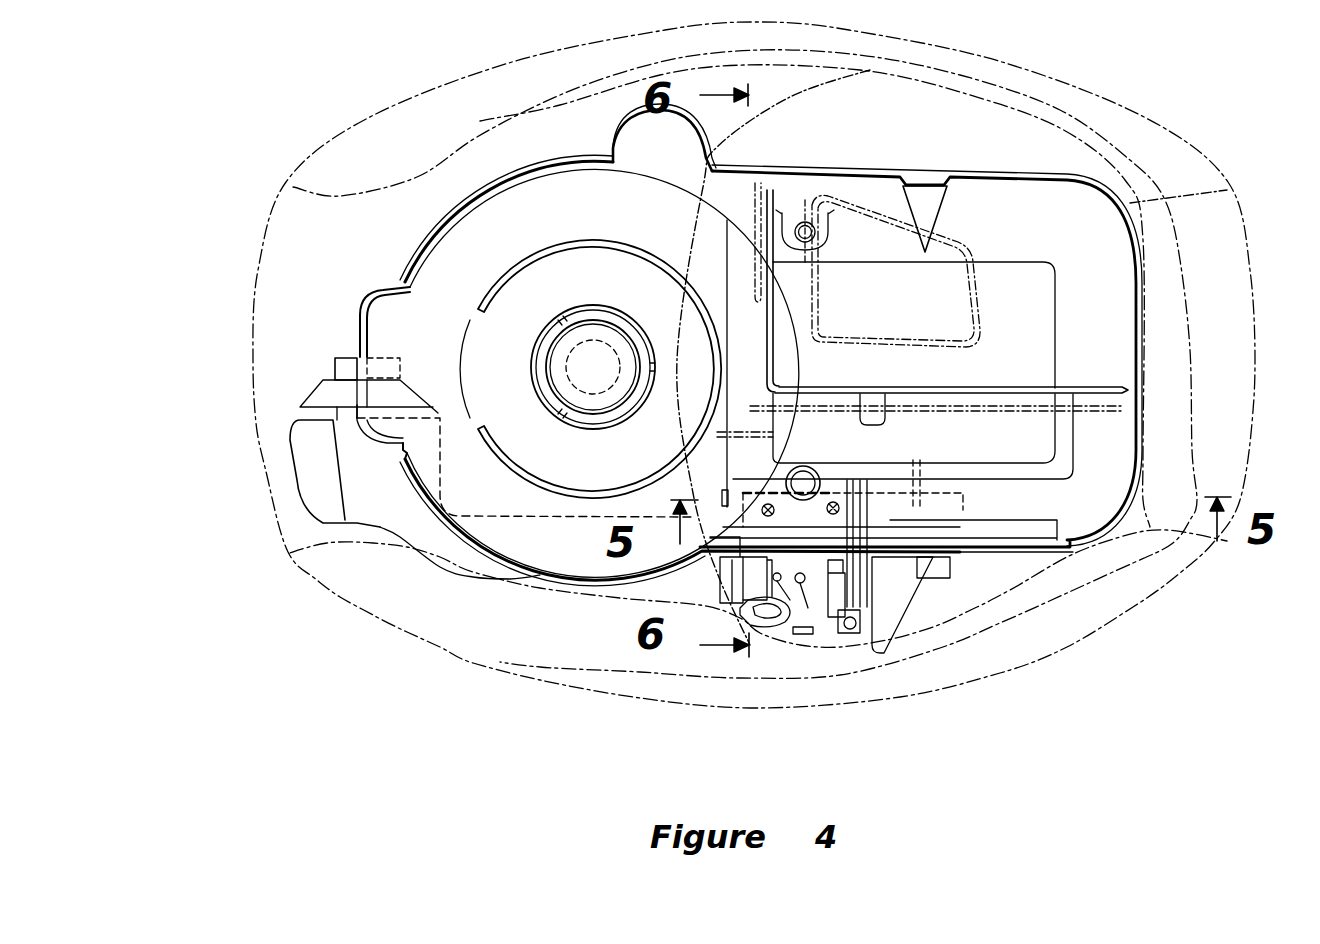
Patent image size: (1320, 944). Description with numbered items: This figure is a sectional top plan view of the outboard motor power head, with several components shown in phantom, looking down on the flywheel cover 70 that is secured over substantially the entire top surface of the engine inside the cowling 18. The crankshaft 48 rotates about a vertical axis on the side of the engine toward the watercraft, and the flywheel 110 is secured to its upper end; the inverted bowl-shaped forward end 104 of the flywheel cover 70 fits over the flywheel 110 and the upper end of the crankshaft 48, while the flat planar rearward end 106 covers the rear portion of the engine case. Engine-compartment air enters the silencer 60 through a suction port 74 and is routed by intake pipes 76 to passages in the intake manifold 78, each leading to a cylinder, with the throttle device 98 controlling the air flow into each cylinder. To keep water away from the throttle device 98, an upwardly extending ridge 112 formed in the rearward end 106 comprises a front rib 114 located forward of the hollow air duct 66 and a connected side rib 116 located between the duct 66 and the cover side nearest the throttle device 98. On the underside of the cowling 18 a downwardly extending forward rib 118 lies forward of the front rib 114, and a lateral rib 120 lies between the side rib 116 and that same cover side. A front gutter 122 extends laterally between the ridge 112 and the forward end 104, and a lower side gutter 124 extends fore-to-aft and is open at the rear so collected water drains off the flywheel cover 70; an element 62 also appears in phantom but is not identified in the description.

The cowling 18 is at (395, 155).
The crankshaft 48 is at (547, 373).
The silencer 60 is at (315, 475).
The deck outline 62 is at (1020, 92).
The hollow air duct 66 is at (983, 313).
The flywheel cover 70 is at (583, 187).
The suction port 74 is at (343, 352).
The intake pipes 76 is at (470, 562).
The intake manifold 78 is at (950, 568).
The throttle device 98 is at (818, 620).
The forward end 104 is at (547, 193).
The rearward end 106 is at (1113, 267).
The flywheel 110 is at (468, 338).
The ridge 112 is at (922, 385).
The front rib 114 is at (777, 327).
The side rib 116 is at (1005, 388).
The forward rib 118 is at (757, 270).
The lateral rib 120 is at (913, 410).
The front gutter 122 is at (747, 357).
The side gutter 124 is at (1033, 510).